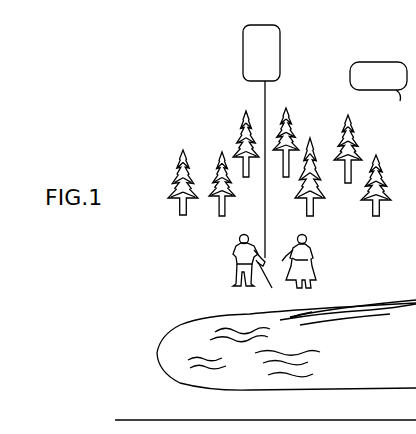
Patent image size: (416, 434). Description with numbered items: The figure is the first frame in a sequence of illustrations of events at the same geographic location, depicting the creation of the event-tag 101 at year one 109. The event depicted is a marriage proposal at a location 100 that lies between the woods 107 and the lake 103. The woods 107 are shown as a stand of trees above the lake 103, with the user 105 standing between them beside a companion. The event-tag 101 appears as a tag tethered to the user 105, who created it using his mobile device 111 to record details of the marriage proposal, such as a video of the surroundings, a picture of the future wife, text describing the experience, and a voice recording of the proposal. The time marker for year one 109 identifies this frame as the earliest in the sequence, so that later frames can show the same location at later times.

The location 100 is at (167, 80).
The event-tag 101 is at (283, 46).
The lake 103 is at (205, 332).
The user 105 is at (233, 251).
The woods 107 is at (196, 145).
The year one 109 is at (378, 96).
The mobile device 111 is at (287, 307).